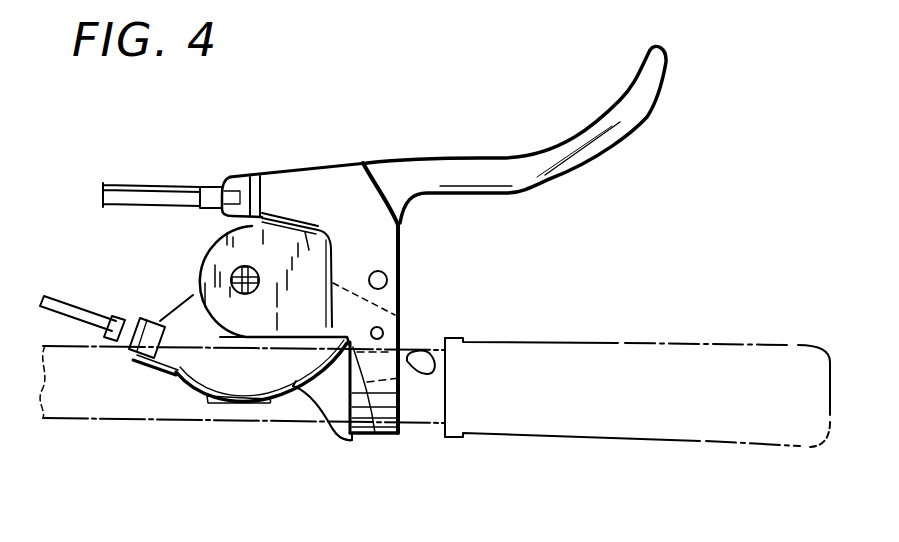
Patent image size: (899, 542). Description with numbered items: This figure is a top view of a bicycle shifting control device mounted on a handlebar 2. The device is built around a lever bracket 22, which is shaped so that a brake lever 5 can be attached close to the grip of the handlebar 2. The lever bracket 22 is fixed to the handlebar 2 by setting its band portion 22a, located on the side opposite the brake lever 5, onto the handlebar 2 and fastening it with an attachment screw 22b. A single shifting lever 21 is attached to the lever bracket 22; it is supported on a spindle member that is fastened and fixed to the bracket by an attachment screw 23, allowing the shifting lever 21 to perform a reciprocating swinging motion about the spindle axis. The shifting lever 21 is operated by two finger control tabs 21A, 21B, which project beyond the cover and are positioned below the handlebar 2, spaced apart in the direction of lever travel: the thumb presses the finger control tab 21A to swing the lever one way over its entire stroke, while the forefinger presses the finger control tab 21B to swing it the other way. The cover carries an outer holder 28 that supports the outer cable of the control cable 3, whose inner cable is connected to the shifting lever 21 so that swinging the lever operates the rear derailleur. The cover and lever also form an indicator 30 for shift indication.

The handlebar 2 is at (82, 402).
The control cable 3 is at (96, 302).
The brake lever 5 is at (550, 143).
The shifting lever 21 is at (300, 407).
The finger control tab 21A is at (352, 443).
The finger control tab 21B is at (432, 374).
The lever bracket 22 is at (328, 173).
The band portion 22a is at (397, 437).
The attachment screw 22b is at (383, 331).
The attachment screw 23 is at (237, 266).
The outer holder 28 is at (141, 363).
The indicator 30 is at (207, 413).